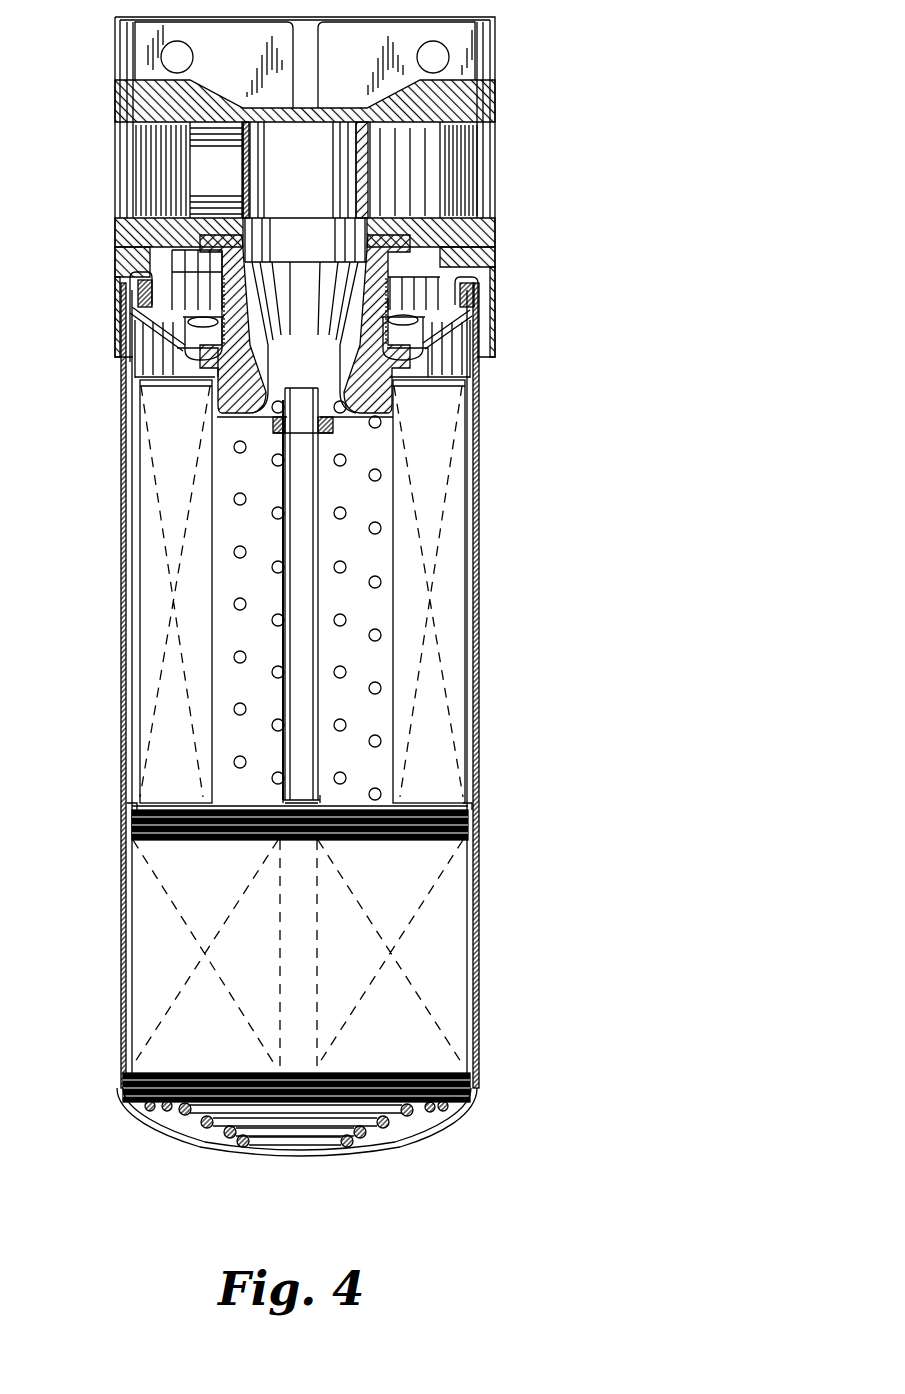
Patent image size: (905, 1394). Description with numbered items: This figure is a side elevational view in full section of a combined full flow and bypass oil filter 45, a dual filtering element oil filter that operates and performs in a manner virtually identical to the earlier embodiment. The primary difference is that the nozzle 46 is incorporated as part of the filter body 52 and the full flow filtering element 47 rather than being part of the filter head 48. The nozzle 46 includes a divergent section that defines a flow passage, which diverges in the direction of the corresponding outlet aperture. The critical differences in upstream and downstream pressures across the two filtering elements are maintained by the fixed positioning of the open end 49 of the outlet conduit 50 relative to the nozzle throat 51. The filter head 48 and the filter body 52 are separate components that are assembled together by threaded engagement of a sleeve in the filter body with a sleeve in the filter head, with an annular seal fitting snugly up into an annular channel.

The dual filtering element oil filter 45 is at (685, 270).
The nozzle 46 is at (340, 300).
The full flow filtering element 47 is at (455, 568).
The filter head 48 is at (570, 103).
The open end 49 is at (307, 383).
The outlet conduit 50 is at (300, 503).
The nozzle throat 51 is at (318, 367).
The filter body 52 is at (535, 835).